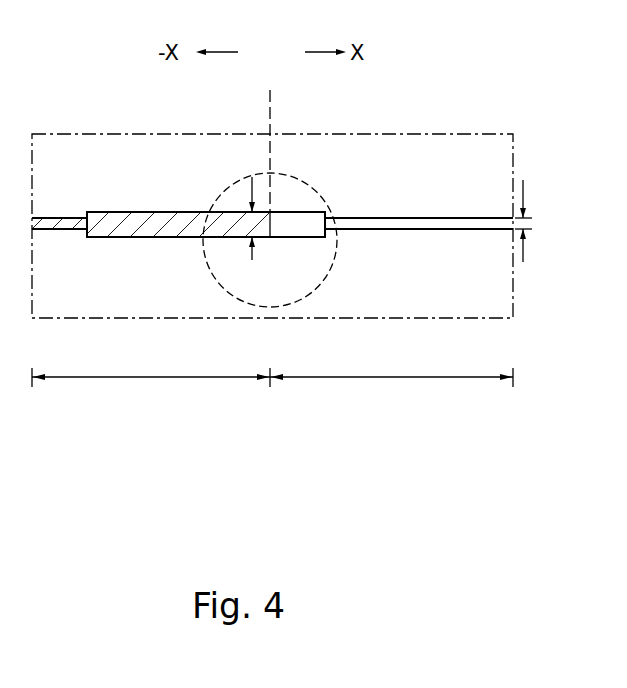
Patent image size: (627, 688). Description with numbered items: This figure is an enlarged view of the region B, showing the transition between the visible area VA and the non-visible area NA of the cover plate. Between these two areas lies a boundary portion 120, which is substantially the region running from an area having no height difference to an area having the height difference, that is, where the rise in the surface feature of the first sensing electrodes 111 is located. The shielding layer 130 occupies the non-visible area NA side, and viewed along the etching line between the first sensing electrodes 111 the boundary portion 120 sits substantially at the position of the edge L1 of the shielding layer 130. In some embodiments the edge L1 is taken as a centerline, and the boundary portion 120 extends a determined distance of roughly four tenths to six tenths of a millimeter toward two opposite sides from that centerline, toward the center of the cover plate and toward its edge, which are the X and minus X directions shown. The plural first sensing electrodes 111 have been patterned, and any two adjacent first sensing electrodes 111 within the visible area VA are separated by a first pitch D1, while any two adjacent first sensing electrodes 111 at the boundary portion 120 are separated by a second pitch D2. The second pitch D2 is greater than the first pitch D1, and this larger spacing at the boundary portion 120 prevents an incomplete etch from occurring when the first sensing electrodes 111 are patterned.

The first sensing electrodes 111 is at (497, 167).
The boundary portion 120 is at (318, 190).
The shielding layer 130 is at (216, 238).
The region B is at (80, 134).
The edge of the shielding layer L1 is at (270, 136).
The first pitch D1 is at (532, 223).
The second pitch D2 is at (252, 222).
The non-visible area NA is at (151, 388).
The visible area VA is at (391, 388).